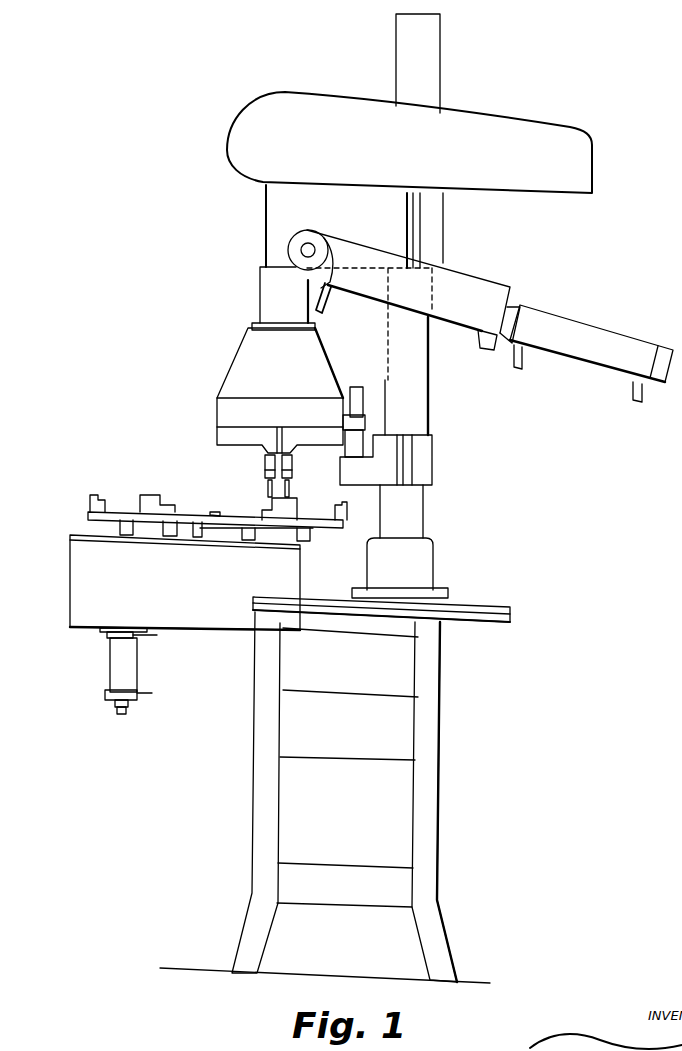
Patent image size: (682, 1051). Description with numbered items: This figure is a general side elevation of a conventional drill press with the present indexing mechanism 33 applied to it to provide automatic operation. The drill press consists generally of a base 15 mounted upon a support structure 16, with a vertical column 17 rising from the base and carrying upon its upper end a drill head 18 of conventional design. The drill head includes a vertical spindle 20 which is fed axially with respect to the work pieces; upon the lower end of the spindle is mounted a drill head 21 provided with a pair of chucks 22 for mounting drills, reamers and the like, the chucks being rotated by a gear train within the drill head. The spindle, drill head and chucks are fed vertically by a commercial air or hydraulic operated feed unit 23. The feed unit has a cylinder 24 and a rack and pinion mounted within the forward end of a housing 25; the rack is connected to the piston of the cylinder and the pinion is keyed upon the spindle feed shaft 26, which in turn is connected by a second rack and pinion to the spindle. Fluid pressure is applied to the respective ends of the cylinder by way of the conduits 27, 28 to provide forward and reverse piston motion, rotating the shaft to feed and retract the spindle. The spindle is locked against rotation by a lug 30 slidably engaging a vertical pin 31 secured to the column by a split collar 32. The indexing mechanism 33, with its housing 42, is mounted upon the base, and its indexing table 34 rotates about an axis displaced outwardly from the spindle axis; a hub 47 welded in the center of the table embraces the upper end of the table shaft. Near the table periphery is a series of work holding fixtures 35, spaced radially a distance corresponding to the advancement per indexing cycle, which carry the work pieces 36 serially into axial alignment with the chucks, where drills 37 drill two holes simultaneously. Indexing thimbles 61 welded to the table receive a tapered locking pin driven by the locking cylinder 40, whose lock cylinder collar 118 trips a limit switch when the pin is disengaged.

The base 15 is at (513, 605).
The support structure 16 is at (430, 717).
The vertical column 17 is at (415, 408).
The drill head 18 is at (262, 191).
The vertical spindle 20 is at (277, 300).
The drill head 21 is at (248, 363).
The chucks 22 is at (265, 466).
The feed unit 23 is at (478, 275).
The cylinder 24 is at (607, 340).
The housing 25 is at (372, 258).
The spindle feed shaft 26 is at (310, 243).
The conduit 27 is at (640, 402).
The conduit 28 is at (520, 368).
The lug 30 is at (360, 420).
The vertical pin 31 is at (355, 386).
The split collar 32 is at (387, 463).
The indexing mechanism 33 is at (95, 602).
The indexing table 34 is at (127, 510).
The work holding fixtures 35 is at (88, 500).
The work pieces 36 is at (98, 495).
The drills 37 is at (268, 492).
The locking cylinder 40 is at (137, 668).
The housing 42 is at (80, 565).
The hub 47 is at (218, 530).
The indexing thimbles 61 is at (120, 528).
The lock cylinder collar 118 is at (127, 710).